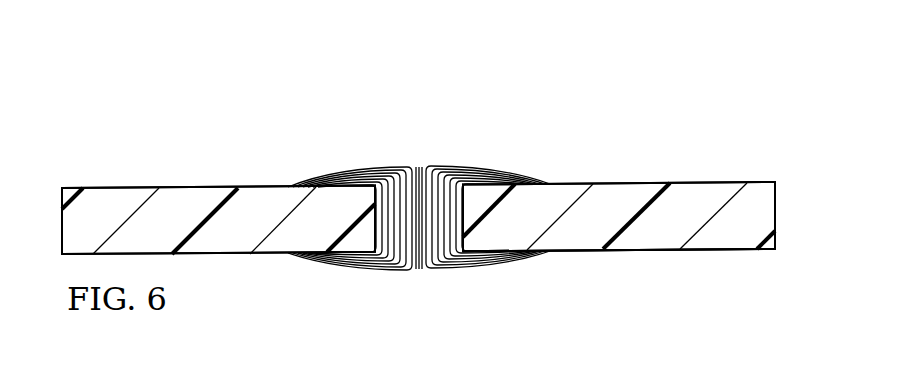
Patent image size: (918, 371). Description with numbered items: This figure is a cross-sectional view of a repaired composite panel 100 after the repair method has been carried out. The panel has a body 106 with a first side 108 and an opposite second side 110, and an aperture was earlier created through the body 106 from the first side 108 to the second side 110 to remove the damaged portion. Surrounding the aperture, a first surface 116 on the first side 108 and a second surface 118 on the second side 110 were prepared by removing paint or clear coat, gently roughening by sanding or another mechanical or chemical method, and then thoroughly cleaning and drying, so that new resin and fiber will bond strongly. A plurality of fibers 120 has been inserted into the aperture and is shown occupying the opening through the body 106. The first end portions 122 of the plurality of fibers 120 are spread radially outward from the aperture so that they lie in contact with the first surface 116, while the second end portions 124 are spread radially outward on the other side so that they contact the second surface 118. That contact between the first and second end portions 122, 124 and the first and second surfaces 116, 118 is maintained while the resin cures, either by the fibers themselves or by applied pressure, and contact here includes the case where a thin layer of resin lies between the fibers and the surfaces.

The composite panel 100 is at (88, 132).
The body 106 is at (187, 153).
The first side 108 is at (683, 182).
The second side 110 is at (683, 250).
The first surface 116 is at (487, 178).
The second surface 118 is at (487, 255).
The plurality of fibers 120 is at (414, 152).
The first end portions 122 is at (340, 177).
The second end portions 124 is at (340, 257).